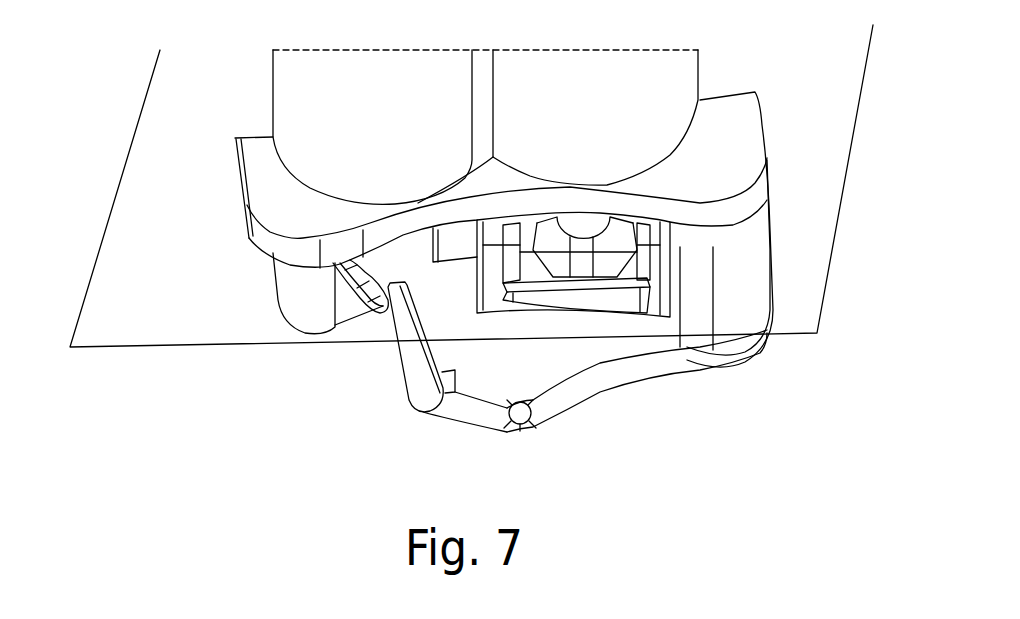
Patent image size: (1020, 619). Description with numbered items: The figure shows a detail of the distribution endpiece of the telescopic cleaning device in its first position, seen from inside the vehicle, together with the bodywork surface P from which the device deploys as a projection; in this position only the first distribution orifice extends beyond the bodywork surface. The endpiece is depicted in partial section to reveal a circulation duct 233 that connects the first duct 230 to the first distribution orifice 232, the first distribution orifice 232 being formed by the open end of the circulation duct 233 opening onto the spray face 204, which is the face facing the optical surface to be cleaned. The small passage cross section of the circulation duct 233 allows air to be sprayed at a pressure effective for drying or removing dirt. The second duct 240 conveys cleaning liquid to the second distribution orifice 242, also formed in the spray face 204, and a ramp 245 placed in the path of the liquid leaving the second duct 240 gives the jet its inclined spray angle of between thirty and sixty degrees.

The plane P is at (153, 73).
The first duct 230 is at (393, 235).
The second duct 240 is at (590, 212).
The second distribution orifice 242 is at (585, 278).
The ramp 245 is at (611, 375).
The circulation duct 233 is at (425, 366).
The first distribution orifice 232 is at (440, 387).
The spray face 204 is at (533, 378).